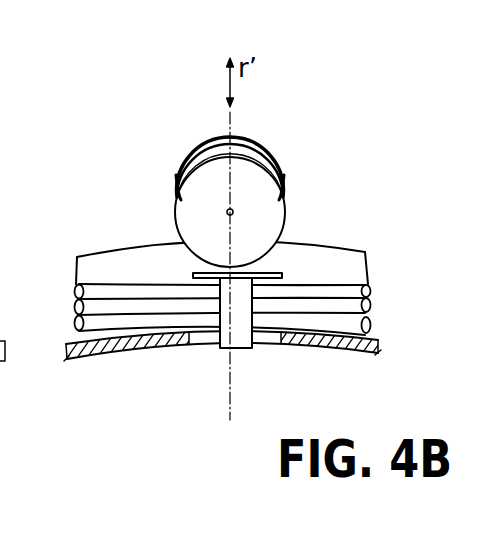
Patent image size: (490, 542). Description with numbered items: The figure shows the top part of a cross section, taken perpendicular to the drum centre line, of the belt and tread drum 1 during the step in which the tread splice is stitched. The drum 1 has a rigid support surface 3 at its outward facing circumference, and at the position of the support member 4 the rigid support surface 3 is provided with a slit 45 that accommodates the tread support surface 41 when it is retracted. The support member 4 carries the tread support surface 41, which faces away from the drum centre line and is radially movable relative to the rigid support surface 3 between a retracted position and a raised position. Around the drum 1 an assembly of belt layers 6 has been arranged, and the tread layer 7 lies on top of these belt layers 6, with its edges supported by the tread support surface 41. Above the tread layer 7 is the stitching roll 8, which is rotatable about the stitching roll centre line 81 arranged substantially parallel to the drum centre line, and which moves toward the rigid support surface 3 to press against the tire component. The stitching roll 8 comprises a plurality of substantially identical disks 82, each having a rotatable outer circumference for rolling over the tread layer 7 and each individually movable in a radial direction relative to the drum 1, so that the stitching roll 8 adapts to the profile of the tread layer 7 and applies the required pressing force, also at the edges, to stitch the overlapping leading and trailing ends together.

The belt and tread drum 1 is at (356, 352).
The rigid support surface 3 is at (70, 343).
The support member 4 is at (238, 348).
The tread support surface 41 is at (283, 275).
The slit 45 is at (205, 343).
The belt layers 6 is at (377, 290).
The tread layer 7 is at (343, 268).
The stitching roll 8 is at (161, 160).
The stitching roll centre line 81 is at (227, 212).
The disks 82 is at (257, 180).